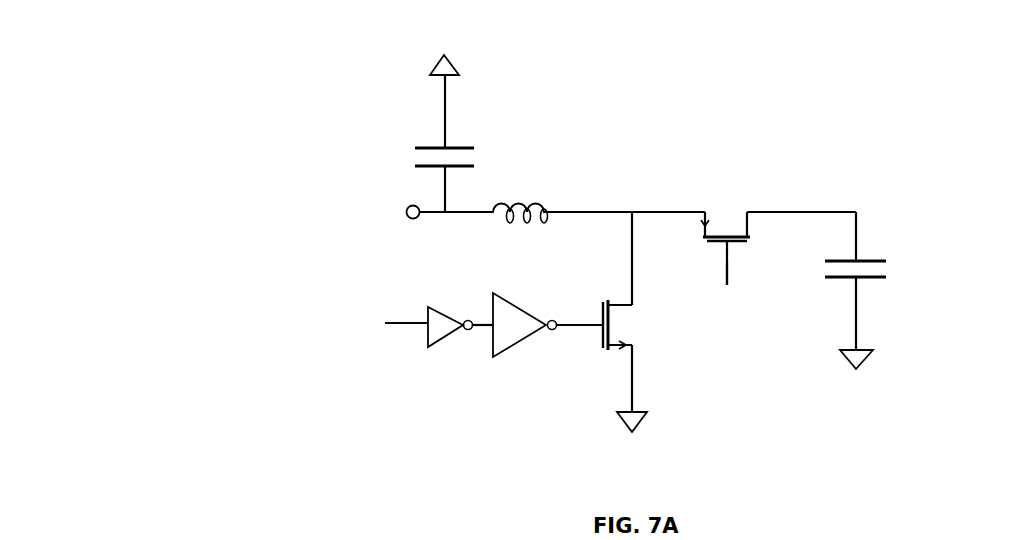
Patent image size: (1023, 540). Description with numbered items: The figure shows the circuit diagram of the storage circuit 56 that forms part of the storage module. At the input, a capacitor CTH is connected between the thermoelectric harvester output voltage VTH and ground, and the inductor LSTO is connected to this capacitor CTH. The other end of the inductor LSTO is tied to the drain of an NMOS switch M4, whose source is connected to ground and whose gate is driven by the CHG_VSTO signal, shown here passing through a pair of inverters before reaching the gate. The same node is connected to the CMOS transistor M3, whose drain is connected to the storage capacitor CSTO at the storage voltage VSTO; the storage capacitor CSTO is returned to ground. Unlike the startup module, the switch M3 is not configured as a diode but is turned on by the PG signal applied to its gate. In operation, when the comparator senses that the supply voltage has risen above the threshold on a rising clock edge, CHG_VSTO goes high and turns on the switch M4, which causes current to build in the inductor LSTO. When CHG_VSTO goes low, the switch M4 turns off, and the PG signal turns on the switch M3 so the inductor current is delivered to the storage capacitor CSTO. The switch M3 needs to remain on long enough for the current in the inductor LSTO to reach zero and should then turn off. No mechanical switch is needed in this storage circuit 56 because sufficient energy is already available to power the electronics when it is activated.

The storage circuit 56 is at (226, 87).
The CMOS transistor M3 is at (725, 229).
The NMOS switch M4 is at (637, 366).
The capacitor CTH is at (456, 133).
The storage capacitor CSTO is at (869, 290).
The inductor LSTO is at (521, 190).
The PG signal PG is at (708, 272).
The thermoelectric harvester output voltage VTH is at (433, 193).
The storage voltage VSTO is at (801, 192).